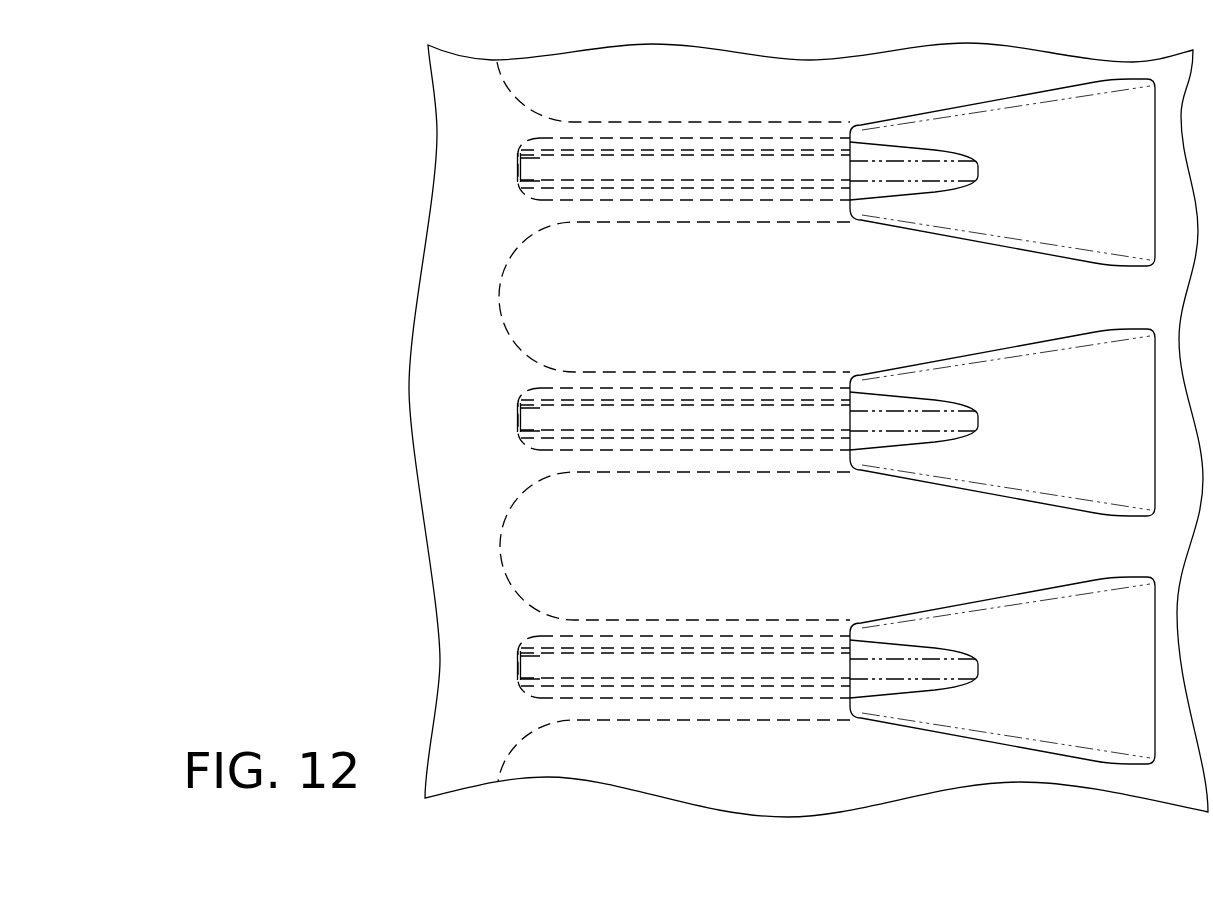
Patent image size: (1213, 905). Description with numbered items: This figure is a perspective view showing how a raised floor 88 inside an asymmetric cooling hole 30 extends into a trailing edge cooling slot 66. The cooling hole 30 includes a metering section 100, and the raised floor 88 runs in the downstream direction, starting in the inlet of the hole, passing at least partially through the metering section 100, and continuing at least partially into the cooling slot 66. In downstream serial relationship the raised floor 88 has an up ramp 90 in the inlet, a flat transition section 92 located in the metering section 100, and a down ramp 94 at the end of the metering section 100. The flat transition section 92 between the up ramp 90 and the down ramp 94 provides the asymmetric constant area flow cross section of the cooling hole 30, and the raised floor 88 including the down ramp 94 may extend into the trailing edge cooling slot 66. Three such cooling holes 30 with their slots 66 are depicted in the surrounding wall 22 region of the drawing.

The garment panel 22 is at (700, 46).
The asymmetric cooling hole 30 is at (778, 210).
The trailing edge cooling slot 66 is at (1013, 221).
The raised floor 88 is at (740, 180).
The up ramp 90 is at (545, 168).
The flat transition section 92 is at (653, 170).
The down ramp 94 is at (893, 170).
The metering section 100 is at (703, 122).